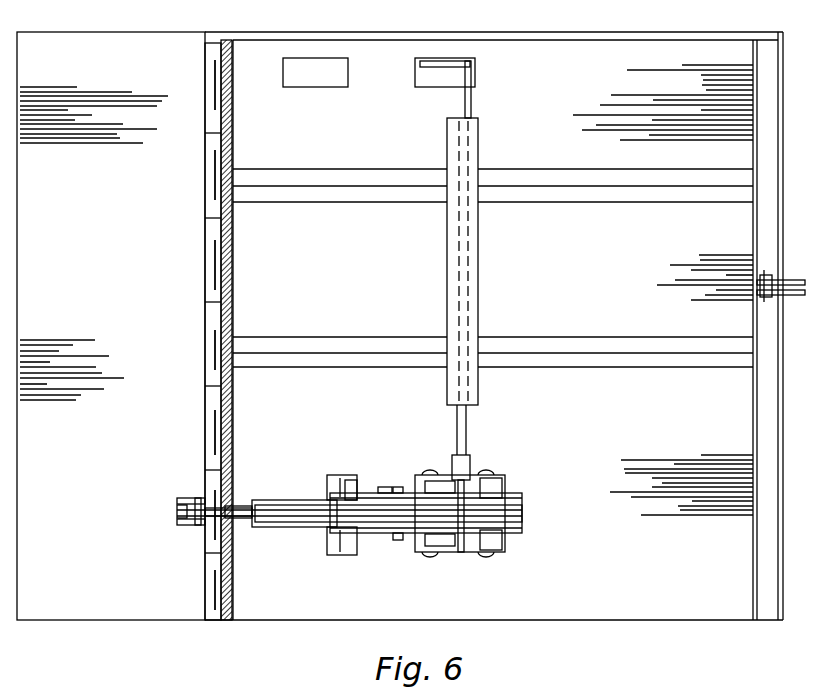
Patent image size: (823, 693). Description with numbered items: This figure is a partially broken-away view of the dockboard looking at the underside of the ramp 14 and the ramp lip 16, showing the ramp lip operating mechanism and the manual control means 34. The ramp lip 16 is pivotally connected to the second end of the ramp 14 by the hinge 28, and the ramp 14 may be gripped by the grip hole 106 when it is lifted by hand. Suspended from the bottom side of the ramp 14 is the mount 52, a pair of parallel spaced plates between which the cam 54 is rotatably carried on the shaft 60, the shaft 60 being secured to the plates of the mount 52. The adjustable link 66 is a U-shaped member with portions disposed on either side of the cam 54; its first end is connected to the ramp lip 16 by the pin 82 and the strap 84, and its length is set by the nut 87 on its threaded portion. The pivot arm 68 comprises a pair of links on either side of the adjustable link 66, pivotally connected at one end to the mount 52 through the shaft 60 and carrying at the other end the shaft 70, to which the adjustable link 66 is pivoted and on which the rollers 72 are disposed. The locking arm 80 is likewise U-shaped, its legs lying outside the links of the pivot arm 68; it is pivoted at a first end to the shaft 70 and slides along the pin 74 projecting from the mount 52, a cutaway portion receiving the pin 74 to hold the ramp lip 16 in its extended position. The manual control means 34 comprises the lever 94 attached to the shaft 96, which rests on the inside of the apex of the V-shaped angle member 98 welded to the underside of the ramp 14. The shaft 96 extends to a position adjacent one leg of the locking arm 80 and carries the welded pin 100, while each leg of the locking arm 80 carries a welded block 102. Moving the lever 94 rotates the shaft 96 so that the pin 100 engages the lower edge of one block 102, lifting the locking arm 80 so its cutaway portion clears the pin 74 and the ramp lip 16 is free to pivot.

The ramp 14 is at (276, 632).
The ramp lip 16 is at (135, 632).
The hinge 28 is at (205, 185).
The manual control means 34 is at (500, 257).
The mount 52 is at (505, 480).
The cam 54 is at (290, 505).
The shaft 60 is at (386, 487).
The adjustable link 66 is at (285, 527).
The pivot arm 68 is at (398, 487).
The shaft 70 is at (347, 480).
The rollers 72 is at (341, 475).
The pin 74 is at (462, 553).
The locking arm 80 is at (506, 490).
The pin 82 is at (195, 498).
The strap 84 is at (186, 525).
The nut 87 is at (236, 508).
The lever 94 is at (445, 63).
The shaft 96 is at (471, 97).
The V-shaped angle member 98 is at (479, 150).
The pin 100 is at (462, 447).
The block 102 is at (440, 481).
The grip hole 106 is at (317, 59).